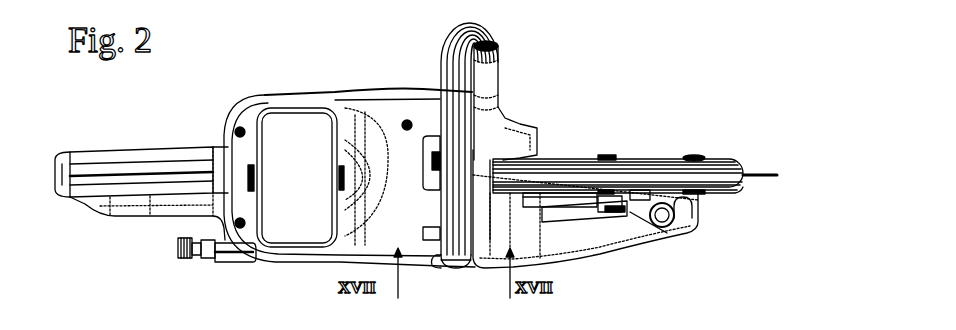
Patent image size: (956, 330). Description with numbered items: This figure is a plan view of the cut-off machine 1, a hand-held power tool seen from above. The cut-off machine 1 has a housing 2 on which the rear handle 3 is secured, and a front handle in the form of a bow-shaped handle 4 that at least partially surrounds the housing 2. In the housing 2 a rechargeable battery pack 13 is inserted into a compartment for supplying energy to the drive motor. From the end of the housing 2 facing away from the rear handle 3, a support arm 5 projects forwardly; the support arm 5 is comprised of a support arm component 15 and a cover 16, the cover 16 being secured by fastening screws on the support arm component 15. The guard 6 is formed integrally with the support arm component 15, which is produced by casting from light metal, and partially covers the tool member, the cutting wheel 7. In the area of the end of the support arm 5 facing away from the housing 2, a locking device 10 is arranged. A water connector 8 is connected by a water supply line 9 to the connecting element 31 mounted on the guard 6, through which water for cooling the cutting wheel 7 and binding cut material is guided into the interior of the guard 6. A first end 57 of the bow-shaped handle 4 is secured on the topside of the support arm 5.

The cut-off machine 1 is at (674, 85).
The housing 2 is at (380, 118).
The handle 3 is at (150, 162).
The bow-shaped handle 4 is at (446, 48).
The support arm 5 is at (662, 257).
The guard 6 is at (620, 168).
The cutting wheel 7 is at (754, 172).
The water connector 8 is at (178, 255).
The water supply line 9 is at (558, 200).
The locking device 10 is at (674, 218).
The rechargeable battery pack 13 is at (288, 133).
The support arm component 15 is at (699, 198).
The cover 16 is at (581, 238).
The connecting element 31 is at (618, 212).
The first end 57 is at (450, 272).